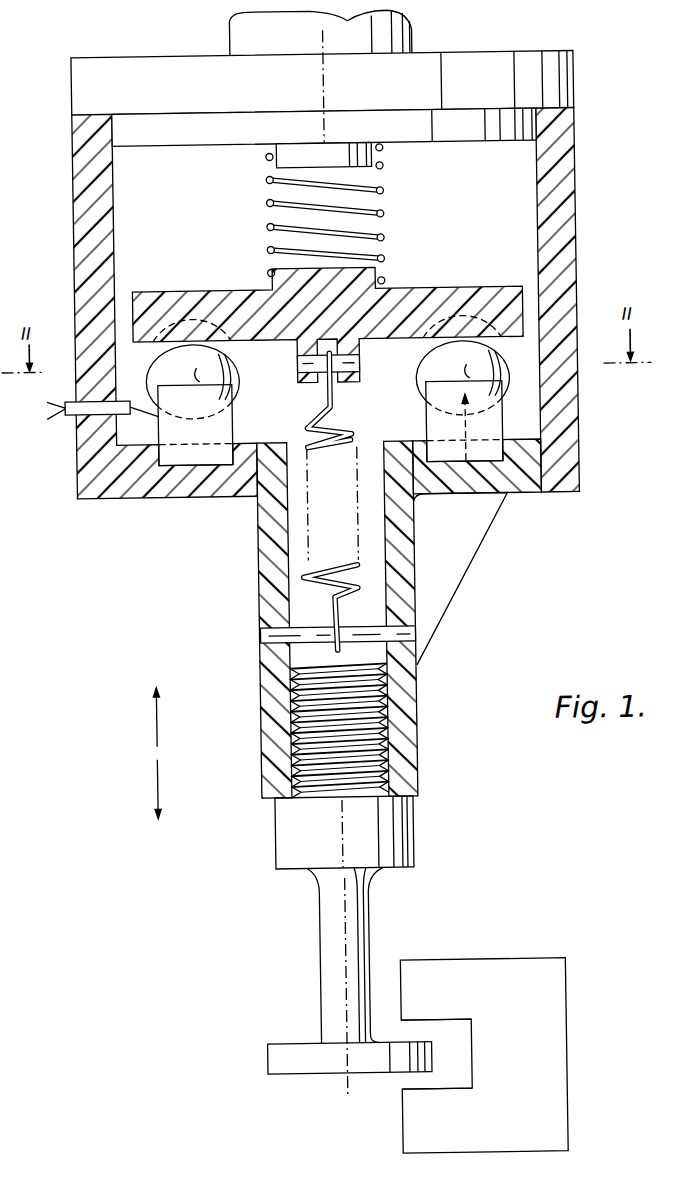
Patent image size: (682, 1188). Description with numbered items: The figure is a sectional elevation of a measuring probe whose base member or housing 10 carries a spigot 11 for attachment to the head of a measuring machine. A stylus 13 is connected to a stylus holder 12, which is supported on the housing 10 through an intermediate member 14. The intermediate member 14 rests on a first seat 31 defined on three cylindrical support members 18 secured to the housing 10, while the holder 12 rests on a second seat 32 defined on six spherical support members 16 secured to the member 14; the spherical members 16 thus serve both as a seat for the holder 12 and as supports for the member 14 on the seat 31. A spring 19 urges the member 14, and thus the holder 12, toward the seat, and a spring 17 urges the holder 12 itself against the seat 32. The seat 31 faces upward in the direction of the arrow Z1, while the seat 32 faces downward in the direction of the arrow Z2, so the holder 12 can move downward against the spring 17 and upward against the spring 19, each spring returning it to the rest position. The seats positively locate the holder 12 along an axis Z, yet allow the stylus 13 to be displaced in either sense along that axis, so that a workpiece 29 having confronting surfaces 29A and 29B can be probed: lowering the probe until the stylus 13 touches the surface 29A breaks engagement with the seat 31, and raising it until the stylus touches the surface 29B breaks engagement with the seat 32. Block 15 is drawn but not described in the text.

The housing 10 is at (585, 207).
The spigot 11 is at (421, 41).
The stylus holder 12 is at (411, 729).
The stylus 13 is at (261, 1056).
The intermediate member 14 is at (458, 292).
The support block 15 is at (493, 424).
The spherical support members 16 is at (515, 352).
The spring 17 is at (317, 577).
The cylindrical support members 18 is at (165, 427).
The spring 19 is at (389, 213).
The workpiece 29 is at (535, 1050).
The surface 29A is at (427, 1085).
The surface 29B is at (434, 1021).
The first seat 31 is at (188, 397).
The second seat 32 is at (514, 500).
The axis Z is at (342, 938).
The arrow Z1 is at (171, 716).
The arrow Z2 is at (172, 790).